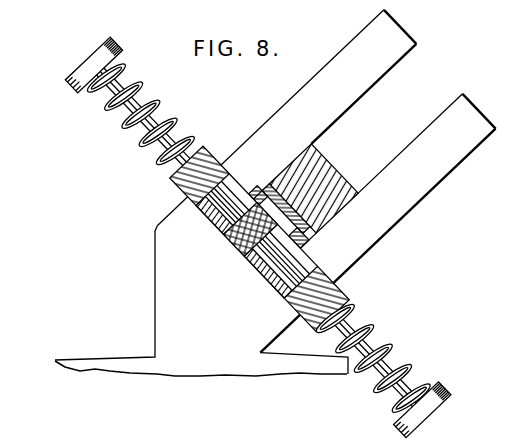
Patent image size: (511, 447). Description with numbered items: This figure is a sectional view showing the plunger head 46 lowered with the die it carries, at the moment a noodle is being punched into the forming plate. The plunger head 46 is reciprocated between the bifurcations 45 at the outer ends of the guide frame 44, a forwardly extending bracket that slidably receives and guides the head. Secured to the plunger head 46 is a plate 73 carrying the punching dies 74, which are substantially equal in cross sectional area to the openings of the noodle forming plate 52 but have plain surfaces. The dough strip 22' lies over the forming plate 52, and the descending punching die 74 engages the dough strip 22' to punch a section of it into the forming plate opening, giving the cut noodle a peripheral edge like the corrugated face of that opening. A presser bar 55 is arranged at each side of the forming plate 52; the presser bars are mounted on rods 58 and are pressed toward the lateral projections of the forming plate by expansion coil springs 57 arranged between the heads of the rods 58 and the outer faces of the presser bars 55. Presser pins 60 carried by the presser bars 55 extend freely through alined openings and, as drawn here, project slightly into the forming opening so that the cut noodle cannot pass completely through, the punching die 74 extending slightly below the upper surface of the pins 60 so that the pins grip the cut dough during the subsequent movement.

The guide frame 44 is at (201, 301).
The bifurcations 45 is at (322, 181).
The plunger head 46 is at (330, 180).
The noodle forming plate 52 is at (267, 275).
The presser bar 55 is at (190, 177).
The expansion coil springs 57 is at (122, 118).
The rods 58 is at (92, 62).
The presser pins 60 is at (202, 218).
The dough strip 22' is at (229, 239).
The plate 73 is at (313, 240).
The punching dies 74 is at (272, 200).